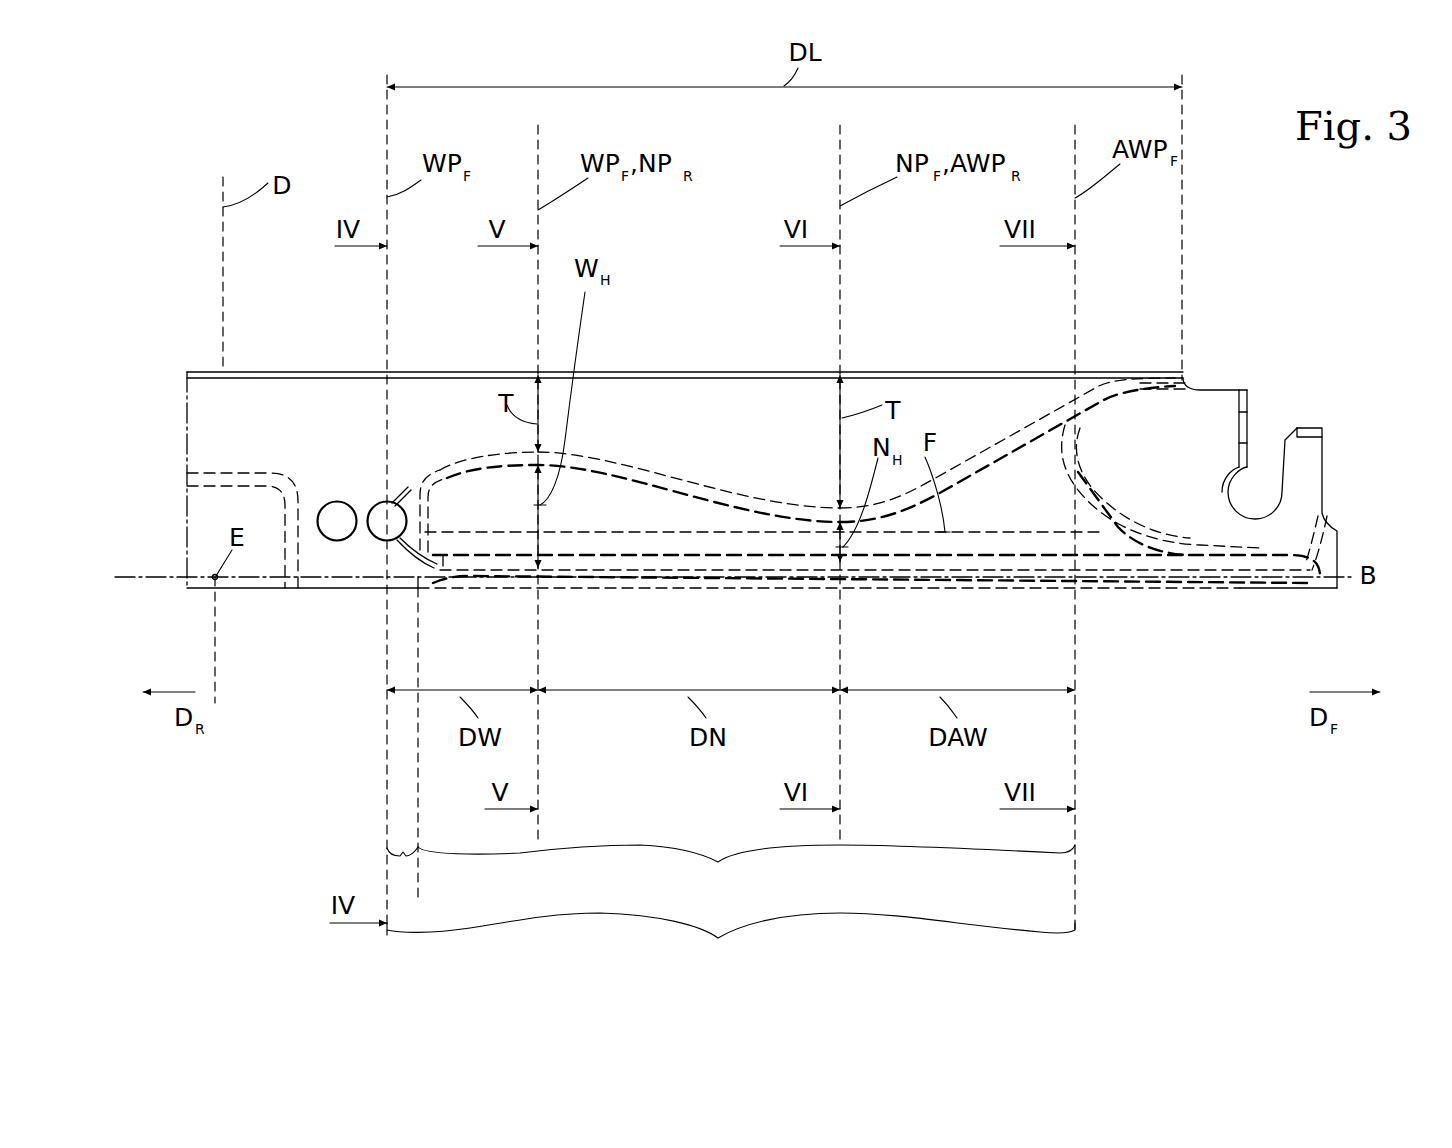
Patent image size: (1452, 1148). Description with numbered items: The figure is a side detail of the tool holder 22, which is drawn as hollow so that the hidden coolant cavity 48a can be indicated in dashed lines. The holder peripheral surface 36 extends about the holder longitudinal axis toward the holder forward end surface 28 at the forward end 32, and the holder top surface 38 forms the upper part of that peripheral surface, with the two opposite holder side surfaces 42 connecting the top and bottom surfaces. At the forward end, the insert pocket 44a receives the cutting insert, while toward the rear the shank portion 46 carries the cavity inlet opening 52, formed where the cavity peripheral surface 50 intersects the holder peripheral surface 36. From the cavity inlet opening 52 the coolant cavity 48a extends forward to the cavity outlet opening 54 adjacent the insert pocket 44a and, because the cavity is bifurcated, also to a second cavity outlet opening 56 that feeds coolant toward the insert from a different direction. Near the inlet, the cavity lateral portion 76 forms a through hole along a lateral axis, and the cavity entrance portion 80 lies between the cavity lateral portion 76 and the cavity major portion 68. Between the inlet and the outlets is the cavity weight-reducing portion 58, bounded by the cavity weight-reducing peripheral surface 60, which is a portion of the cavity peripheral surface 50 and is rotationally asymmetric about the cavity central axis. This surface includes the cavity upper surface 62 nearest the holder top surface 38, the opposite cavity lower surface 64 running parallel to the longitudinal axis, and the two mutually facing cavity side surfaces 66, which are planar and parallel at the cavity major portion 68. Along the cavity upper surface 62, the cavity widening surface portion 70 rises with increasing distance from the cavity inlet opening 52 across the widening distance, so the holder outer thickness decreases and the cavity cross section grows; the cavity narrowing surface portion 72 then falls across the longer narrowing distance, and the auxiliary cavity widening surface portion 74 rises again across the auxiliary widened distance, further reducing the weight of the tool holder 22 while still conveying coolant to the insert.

The tool holder 22 is at (288, 765).
The holder forward end surface 28 is at (1327, 476).
The forward end 32 is at (1374, 504).
The holder peripheral surface 36 is at (735, 434).
The holder top surface 38 is at (683, 377).
The holder side surfaces 42 is at (670, 423).
The insert pocket 44a is at (1287, 388).
The shank portion 46 is at (343, 318).
The coolant cavity 48a is at (497, 496).
The cavity peripheral surface 50 is at (1023, 496).
The cavity inlet opening 52 is at (375, 537).
The cavity outlet opening 54 is at (1200, 374).
The second cavity outlet opening 56 is at (1345, 523).
The cavity weight-reducing portion 58 is at (731, 940).
The cavity weight-reducing peripheral surface 60 is at (653, 503).
The cavity upper surface 62 is at (768, 497).
The cavity lower surface 64 is at (905, 562).
The cavity side surfaces 66 is at (1043, 503).
The cavity major portion 68 is at (746, 867).
The cavity widening surface portion 70 is at (460, 468).
The cavity narrowing surface portion 72 is at (612, 467).
The auxiliary cavity widening surface portion 74 is at (991, 474).
The cavity lateral portion 76 is at (373, 488).
The cavity entrance portion 80 is at (403, 867).